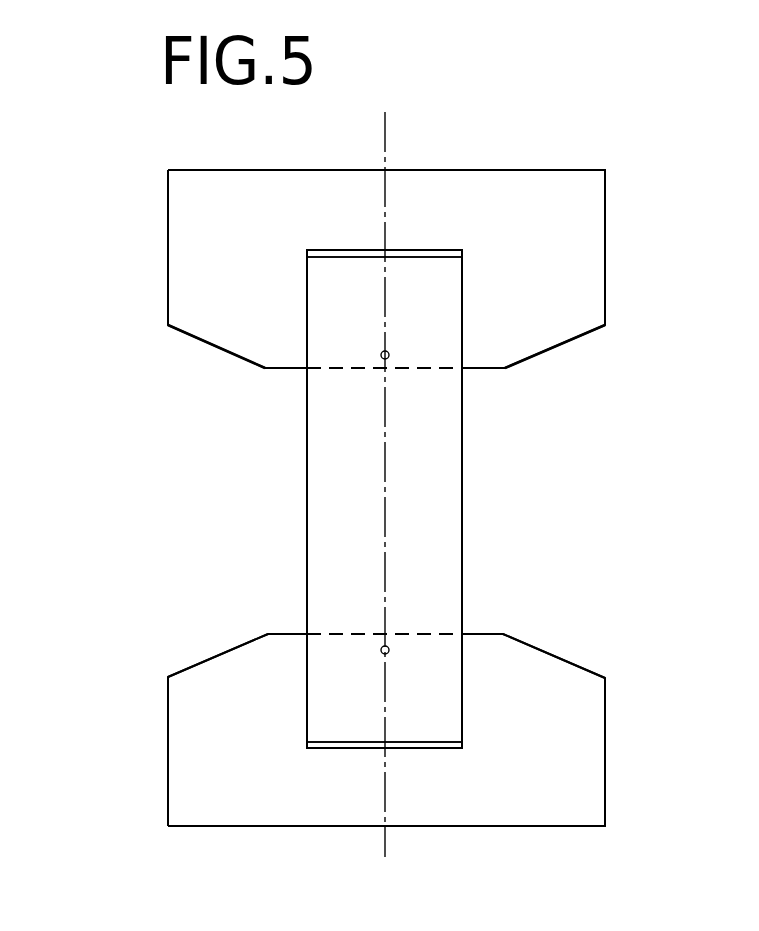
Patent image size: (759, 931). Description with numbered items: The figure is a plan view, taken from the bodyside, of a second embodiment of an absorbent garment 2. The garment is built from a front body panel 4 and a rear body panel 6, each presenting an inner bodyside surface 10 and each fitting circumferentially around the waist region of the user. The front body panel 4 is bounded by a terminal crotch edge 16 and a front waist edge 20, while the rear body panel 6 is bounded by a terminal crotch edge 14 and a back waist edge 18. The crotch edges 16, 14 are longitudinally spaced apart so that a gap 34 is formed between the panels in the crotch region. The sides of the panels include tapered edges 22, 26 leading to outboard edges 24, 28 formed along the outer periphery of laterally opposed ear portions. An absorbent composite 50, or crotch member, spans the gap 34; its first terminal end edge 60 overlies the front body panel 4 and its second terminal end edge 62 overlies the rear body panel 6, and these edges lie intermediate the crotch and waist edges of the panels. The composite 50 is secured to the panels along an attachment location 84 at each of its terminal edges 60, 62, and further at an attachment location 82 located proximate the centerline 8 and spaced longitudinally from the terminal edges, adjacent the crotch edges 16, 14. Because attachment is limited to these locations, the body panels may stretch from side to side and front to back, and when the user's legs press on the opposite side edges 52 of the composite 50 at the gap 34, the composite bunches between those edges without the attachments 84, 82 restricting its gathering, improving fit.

The absorbent garment 2 is at (533, 511).
The front body panel 4 is at (592, 772).
The rear body panel 6 is at (578, 275).
The centerline 8 is at (386, 152).
The bodyside surface 10 is at (547, 245).
The terminal crotch edge of rear body panel 14 is at (478, 370).
The terminal crotch edge of front body panel 16 is at (483, 638).
The back waist edge 18 is at (452, 170).
The front waist edge 20 is at (500, 826).
The tapered edge 22 is at (215, 655).
The outboard edge 24 is at (170, 743).
The tapered edge 26 is at (198, 340).
The outboard edge 28 is at (178, 248).
The gap 34 is at (292, 497).
The absorbent composite 50 is at (358, 513).
The side edges of absorbent composite 52 is at (307, 426).
The first terminal end edge of absorbent composite 60 is at (340, 750).
The second terminal end edge of absorbent composite 62 is at (355, 250).
The attachment location 82 is at (388, 358).
The attachment location 84 is at (422, 250).